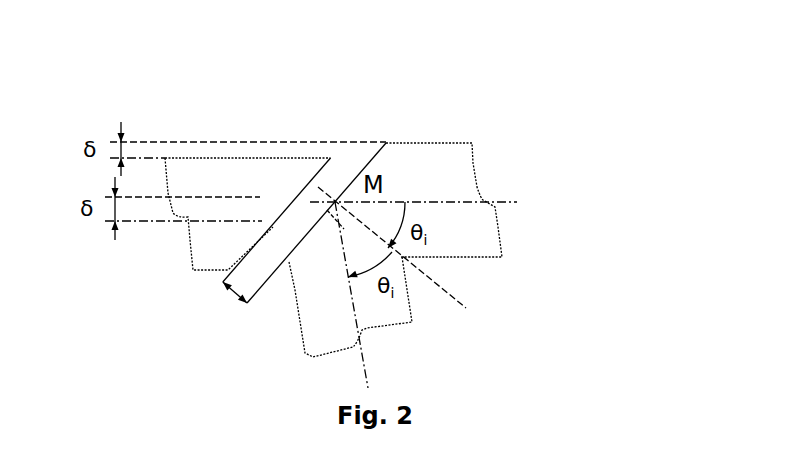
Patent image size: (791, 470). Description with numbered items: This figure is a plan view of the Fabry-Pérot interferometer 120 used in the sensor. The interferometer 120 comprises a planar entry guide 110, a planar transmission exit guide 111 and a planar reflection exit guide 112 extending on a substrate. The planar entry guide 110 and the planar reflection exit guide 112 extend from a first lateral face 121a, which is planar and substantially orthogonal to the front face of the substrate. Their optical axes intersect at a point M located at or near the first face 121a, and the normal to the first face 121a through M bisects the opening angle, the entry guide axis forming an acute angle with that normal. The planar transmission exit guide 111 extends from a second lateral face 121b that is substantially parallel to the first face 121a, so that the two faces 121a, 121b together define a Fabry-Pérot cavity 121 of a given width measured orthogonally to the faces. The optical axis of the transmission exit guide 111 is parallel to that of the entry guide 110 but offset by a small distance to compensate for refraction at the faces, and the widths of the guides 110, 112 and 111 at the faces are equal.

The Fabry-Pérot interferometer 120 is at (498, 95).
The planar entry guide 110 is at (477, 230).
The planar transmission exit guide 111 is at (222, 193).
The planar reflection exit guide 112 is at (308, 322).
The Fabry-Pérot cavity 121 is at (265, 211).
The first lateral face 121a is at (362, 157).
The second lateral face 121b is at (285, 230).